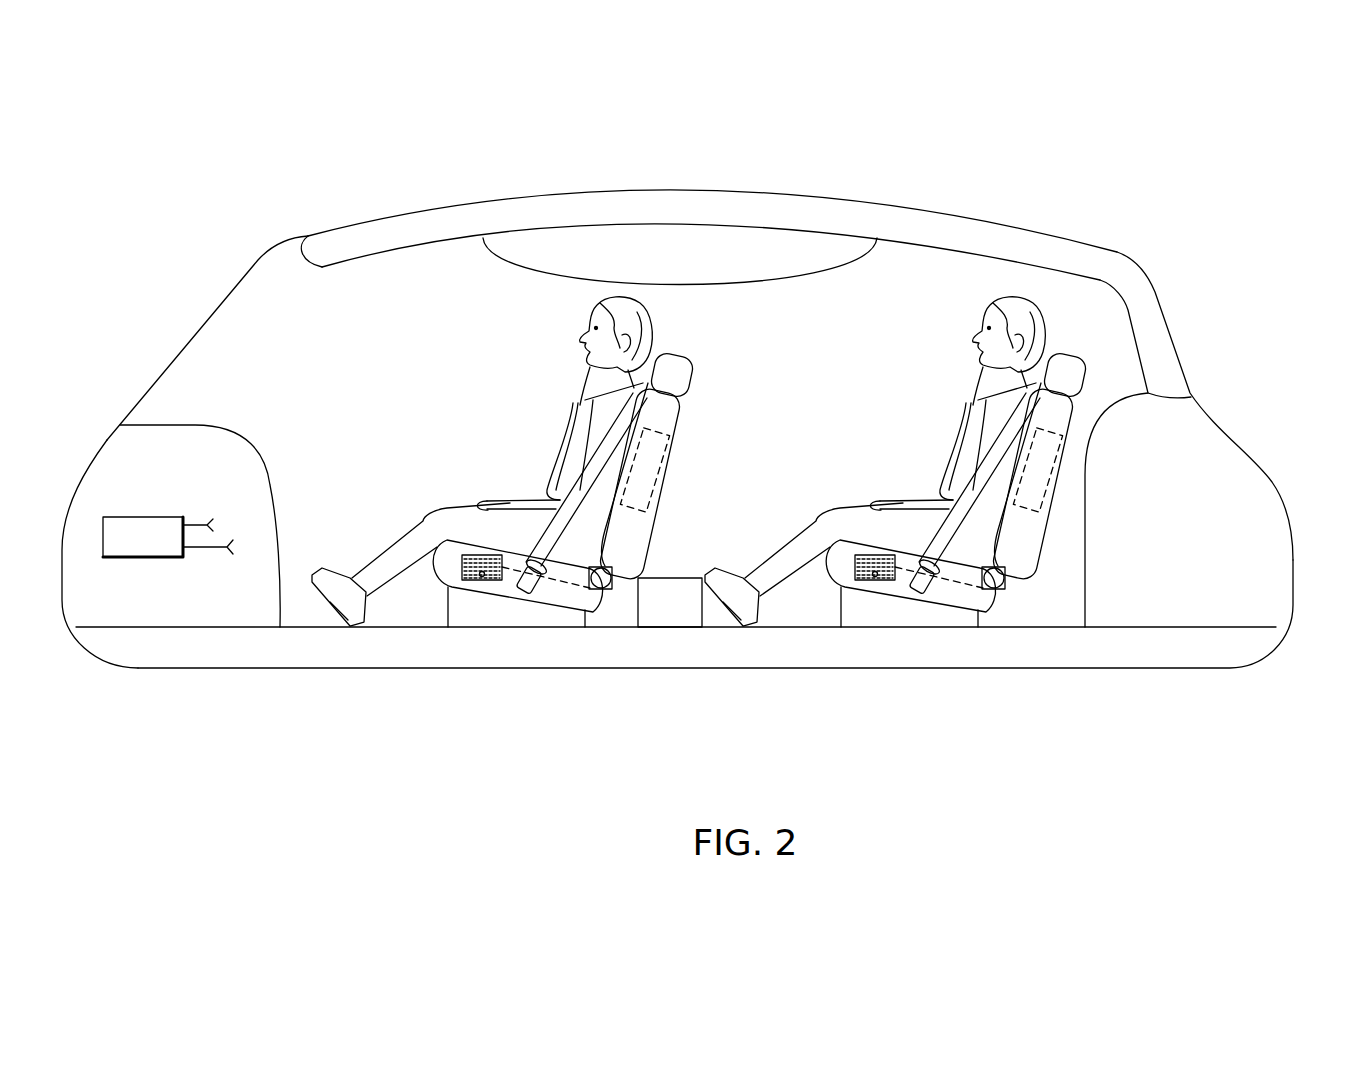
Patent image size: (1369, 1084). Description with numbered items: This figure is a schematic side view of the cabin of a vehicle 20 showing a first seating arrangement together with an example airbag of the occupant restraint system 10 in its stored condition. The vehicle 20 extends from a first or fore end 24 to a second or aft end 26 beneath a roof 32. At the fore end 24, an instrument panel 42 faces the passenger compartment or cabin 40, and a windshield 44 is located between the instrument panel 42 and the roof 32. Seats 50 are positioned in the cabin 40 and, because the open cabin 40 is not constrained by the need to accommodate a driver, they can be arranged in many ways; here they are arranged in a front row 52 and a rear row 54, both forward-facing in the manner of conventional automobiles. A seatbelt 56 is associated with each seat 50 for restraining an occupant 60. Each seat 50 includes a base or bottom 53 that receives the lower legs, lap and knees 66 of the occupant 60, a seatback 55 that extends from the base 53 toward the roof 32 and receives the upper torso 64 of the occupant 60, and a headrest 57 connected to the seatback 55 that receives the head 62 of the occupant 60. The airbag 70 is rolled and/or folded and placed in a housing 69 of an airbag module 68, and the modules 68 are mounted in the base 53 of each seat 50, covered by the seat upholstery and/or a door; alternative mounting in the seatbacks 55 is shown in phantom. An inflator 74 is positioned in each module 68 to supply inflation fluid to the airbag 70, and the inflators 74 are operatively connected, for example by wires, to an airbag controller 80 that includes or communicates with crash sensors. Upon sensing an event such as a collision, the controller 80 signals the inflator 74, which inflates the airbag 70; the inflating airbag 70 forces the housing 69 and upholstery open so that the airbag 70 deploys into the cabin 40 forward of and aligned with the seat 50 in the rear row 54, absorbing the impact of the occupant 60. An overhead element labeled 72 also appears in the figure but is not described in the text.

The occupant restraint system 10 is at (343, 689).
The vehicle 20 is at (1265, 550).
The fore end 24 is at (125, 359).
The aft end 26 is at (1240, 363).
The roof 32 is at (680, 197).
The passenger cabin 40 is at (821, 387).
The instrument panel 42 is at (215, 430).
The windshield 44 is at (195, 335).
The seats 50 is at (513, 614).
The front row 52 is at (559, 649).
The base 53 is at (462, 540).
The rear row 54 is at (953, 649).
The seatback 55 is at (673, 418).
The seatbelt 56 is at (560, 480).
The headrest 57 is at (678, 352).
The occupant 60 is at (596, 424).
The head 62 is at (636, 330).
The upper torso 64 is at (597, 450).
The lower legs/lap/knees 66 is at (438, 523).
The airbag module 68 is at (656, 474).
The housing 69 is at (457, 567).
The airbag 70 is at (455, 588).
The sensor 72 is at (762, 278).
The inflator 74 is at (473, 580).
The airbag controller 80 is at (145, 527).